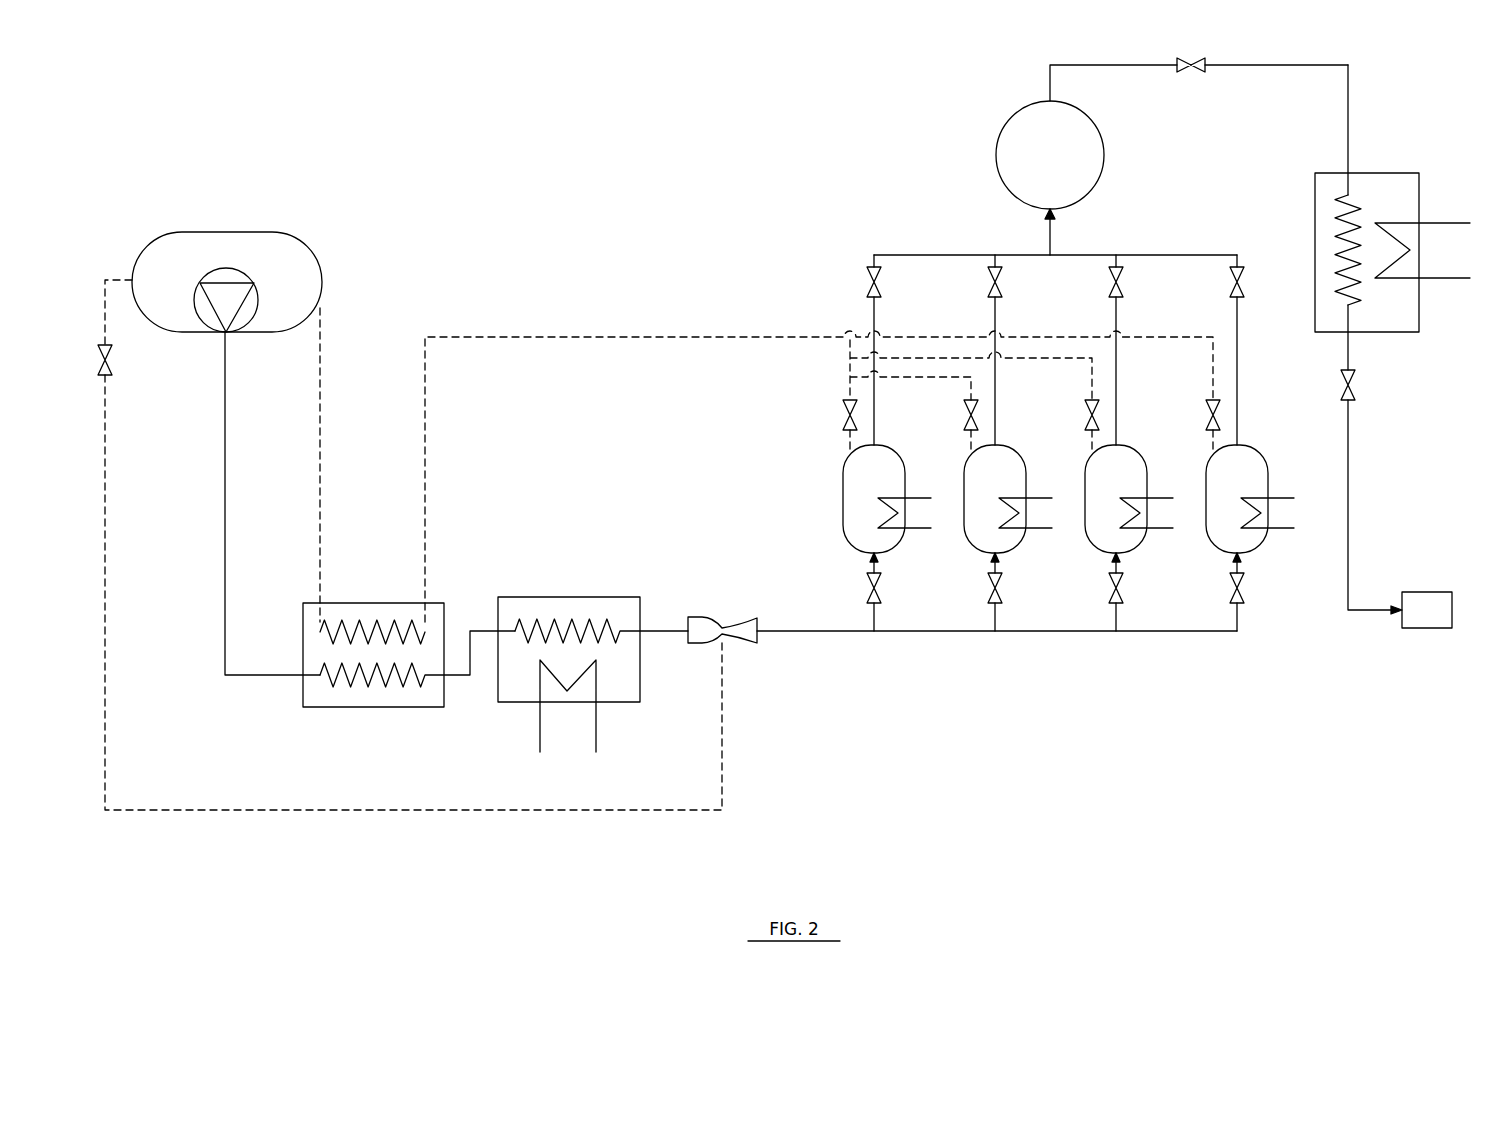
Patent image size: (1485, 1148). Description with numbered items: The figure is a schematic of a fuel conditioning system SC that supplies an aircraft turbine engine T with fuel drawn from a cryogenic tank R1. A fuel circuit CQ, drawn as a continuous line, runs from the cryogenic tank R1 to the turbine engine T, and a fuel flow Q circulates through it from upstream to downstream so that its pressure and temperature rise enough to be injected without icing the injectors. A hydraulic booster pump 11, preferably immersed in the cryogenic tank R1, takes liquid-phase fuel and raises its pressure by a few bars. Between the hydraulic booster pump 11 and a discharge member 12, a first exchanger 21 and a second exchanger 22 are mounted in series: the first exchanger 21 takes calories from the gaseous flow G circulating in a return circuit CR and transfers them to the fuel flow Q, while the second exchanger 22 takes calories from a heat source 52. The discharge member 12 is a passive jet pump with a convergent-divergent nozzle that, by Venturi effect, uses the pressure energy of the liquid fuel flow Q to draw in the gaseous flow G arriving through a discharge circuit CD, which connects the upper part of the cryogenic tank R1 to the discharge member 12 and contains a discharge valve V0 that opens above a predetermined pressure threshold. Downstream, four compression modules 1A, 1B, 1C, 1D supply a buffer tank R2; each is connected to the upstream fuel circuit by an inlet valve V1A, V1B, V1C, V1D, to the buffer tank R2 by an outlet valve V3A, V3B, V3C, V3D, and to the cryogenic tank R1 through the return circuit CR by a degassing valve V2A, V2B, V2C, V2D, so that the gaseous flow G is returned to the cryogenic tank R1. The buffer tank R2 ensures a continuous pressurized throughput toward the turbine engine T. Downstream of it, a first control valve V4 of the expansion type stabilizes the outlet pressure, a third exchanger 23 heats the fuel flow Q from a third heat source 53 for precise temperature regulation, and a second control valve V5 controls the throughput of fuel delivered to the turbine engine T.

The hydraulic booster pump 11 is at (231, 269).
The cryogenic tank R1 is at (312, 250).
The discharge valve V0 is at (126, 360).
The fuel flow Q is at (803, 422).
The fuel circuit CQ is at (224, 487).
The discharge circuit CD is at (243, 810).
The return circuit CR is at (540, 337).
The gaseous flow G is at (487, 557).
The first exchanger 21 is at (354, 603).
The second exchanger 22 is at (560, 597).
The heat source 52 is at (556, 750).
The discharge member 12 is at (730, 620).
The fuel conditioning system SC is at (512, 186).
The buffer tank R2 is at (996, 157).
The first control valve V4 is at (1191, 86).
The third exchanger 23 is at (1368, 173).
The third heat source 53 is at (1446, 263).
The second control valve V5 is at (1367, 385).
The turbine engine T is at (1427, 610).
The outlet valve V3A is at (893, 350).
The outlet valve V3B is at (1014, 350).
The outlet valve V3C is at (1135, 350).
The outlet valve V3D is at (1257, 350).
The degassing valve V2A is at (830, 415).
The degassing valve V2B is at (951, 415).
The degassing valve V2C is at (1072, 415).
The degassing valve V2D is at (1192, 415).
The compression module 1A is at (866, 478).
The compression module 1B is at (987, 478).
The compression module 1C is at (1108, 478).
The compression module 1D is at (1229, 478).
The inlet valve V1A is at (894, 592).
The inlet valve V1B is at (1015, 592).
The inlet valve V1C is at (1136, 592).
The inlet valve V1D is at (1258, 592).